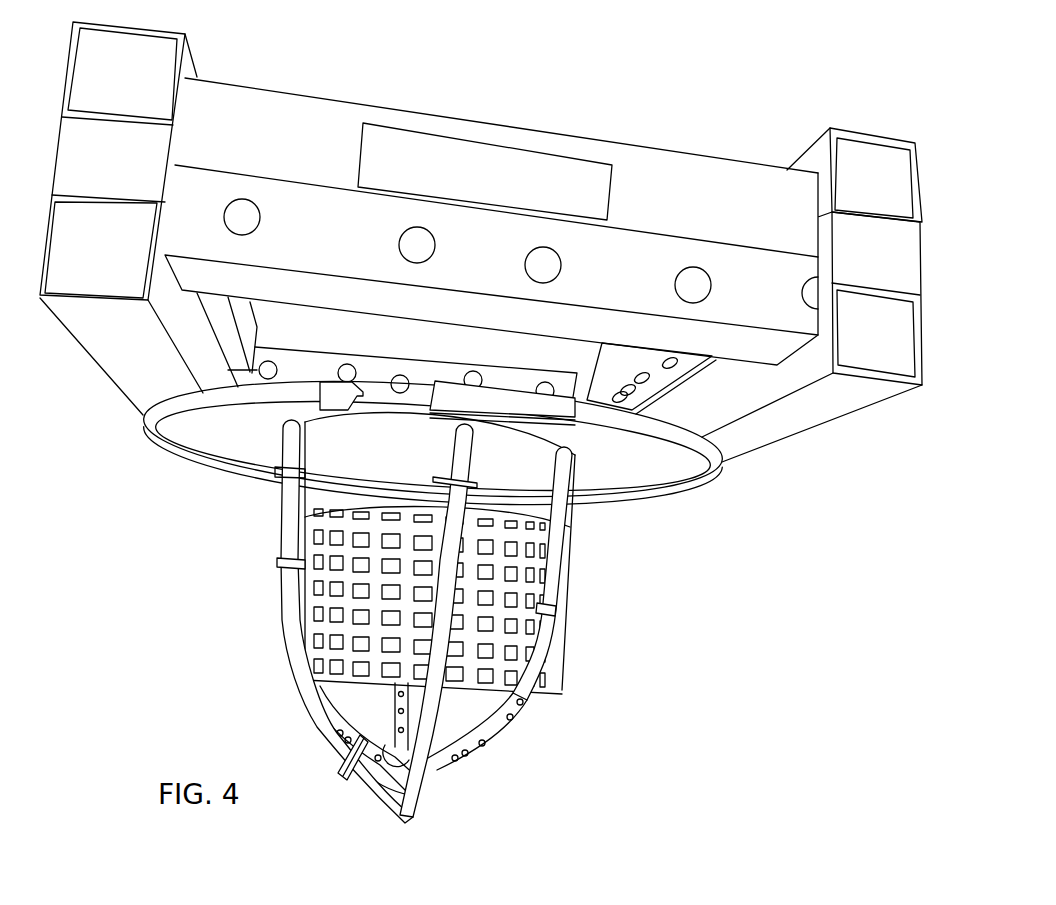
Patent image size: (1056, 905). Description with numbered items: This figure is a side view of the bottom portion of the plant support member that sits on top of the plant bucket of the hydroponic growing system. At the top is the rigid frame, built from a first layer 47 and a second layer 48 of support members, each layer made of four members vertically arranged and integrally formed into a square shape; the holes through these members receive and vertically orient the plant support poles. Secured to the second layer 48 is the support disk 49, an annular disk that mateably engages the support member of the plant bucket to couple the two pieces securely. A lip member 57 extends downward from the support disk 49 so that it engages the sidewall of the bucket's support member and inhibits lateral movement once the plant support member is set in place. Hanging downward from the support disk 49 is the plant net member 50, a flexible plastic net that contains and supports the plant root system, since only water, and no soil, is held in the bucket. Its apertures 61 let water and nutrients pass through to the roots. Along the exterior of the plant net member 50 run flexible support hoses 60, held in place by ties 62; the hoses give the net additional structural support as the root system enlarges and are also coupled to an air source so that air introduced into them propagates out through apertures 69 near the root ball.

The first layer 47 is at (932, 178).
The second layer 48 is at (943, 337).
The support disk 49 is at (697, 497).
The plant net member 50 is at (457, 725).
The lip member 57 is at (170, 452).
The support hoses 60 is at (293, 688).
The apertures 61 is at (517, 568).
The ties 62 is at (452, 475).
The apertures 69 is at (400, 731).